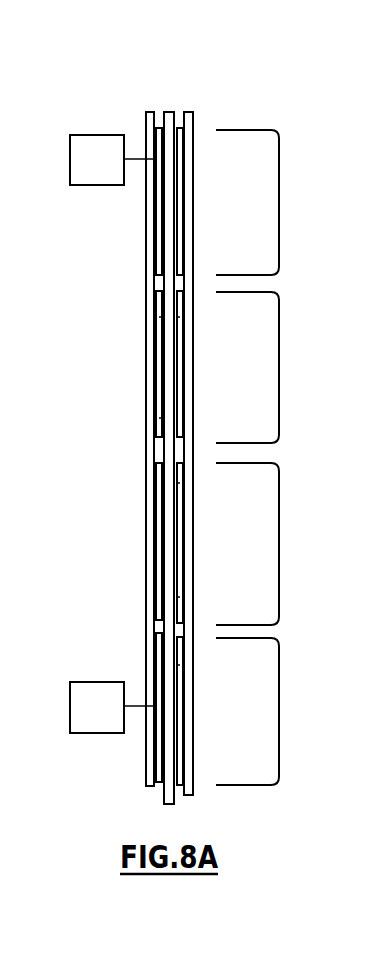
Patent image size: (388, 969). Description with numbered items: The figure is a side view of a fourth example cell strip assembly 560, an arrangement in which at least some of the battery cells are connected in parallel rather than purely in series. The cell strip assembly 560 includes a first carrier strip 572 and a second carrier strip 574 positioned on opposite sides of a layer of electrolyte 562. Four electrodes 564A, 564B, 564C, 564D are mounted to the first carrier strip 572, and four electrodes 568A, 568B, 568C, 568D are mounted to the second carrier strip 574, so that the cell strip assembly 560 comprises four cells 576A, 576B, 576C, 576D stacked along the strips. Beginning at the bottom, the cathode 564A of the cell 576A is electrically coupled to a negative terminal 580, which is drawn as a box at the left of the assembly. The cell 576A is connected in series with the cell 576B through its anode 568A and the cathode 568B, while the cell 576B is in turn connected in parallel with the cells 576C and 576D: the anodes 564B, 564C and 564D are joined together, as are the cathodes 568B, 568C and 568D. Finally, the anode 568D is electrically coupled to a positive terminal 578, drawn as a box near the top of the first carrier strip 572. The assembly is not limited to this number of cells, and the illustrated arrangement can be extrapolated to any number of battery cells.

The cell strip assembly 560 is at (86, 294).
The layer of electrolyte 562 is at (172, 126).
The electrode 564A is at (157, 753).
The electrode 564B is at (157, 553).
The electrode 564C is at (157, 383).
The electrode 564D is at (157, 213).
The electrode 568A is at (181, 683).
The electrode 568B is at (180, 545).
The electrode 568C is at (181, 383).
The electrode 568D is at (181, 200).
The first carrier strip 572 is at (146, 352).
The second carrier strip 574 is at (194, 346).
The cell 576A is at (279, 710).
The cell 576B is at (279, 522).
The cell 576C is at (279, 357).
The cell 576D is at (279, 190).
The positive terminal 578 is at (88, 135).
The negative terminal 580 is at (88, 682).